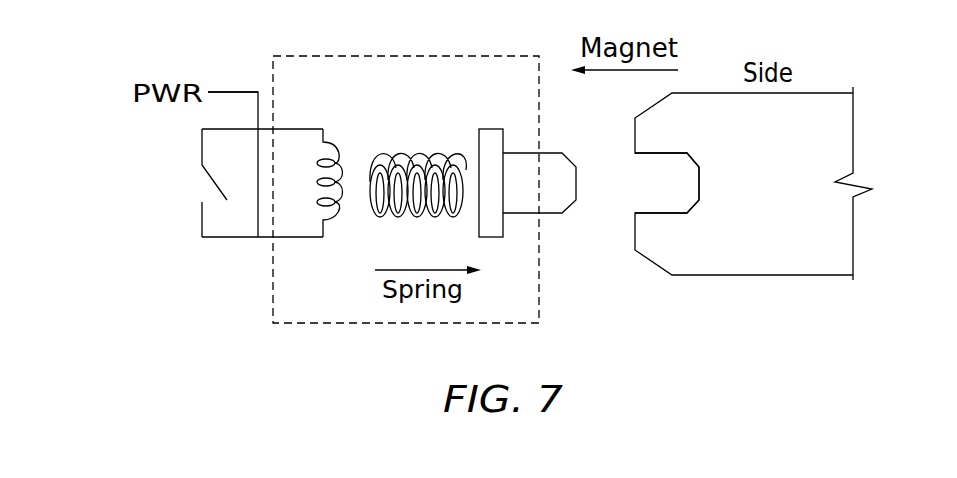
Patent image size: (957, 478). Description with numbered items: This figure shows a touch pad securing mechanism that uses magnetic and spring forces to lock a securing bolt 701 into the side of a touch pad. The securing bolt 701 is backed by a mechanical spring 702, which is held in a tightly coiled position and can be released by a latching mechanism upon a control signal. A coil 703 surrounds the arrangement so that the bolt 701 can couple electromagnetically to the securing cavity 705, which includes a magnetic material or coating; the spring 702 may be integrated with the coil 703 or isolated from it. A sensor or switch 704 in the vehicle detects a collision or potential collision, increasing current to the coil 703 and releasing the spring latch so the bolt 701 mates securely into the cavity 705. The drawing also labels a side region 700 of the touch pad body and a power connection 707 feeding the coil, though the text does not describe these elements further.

The magnet side body 700 is at (783, 192).
The securing bolt 701 is at (557, 224).
The spring 702 is at (431, 146).
The coil 703 is at (329, 128).
The sensor or switch 704 is at (220, 216).
The securing cavity 705 is at (667, 224).
The power source 707 is at (123, 95).